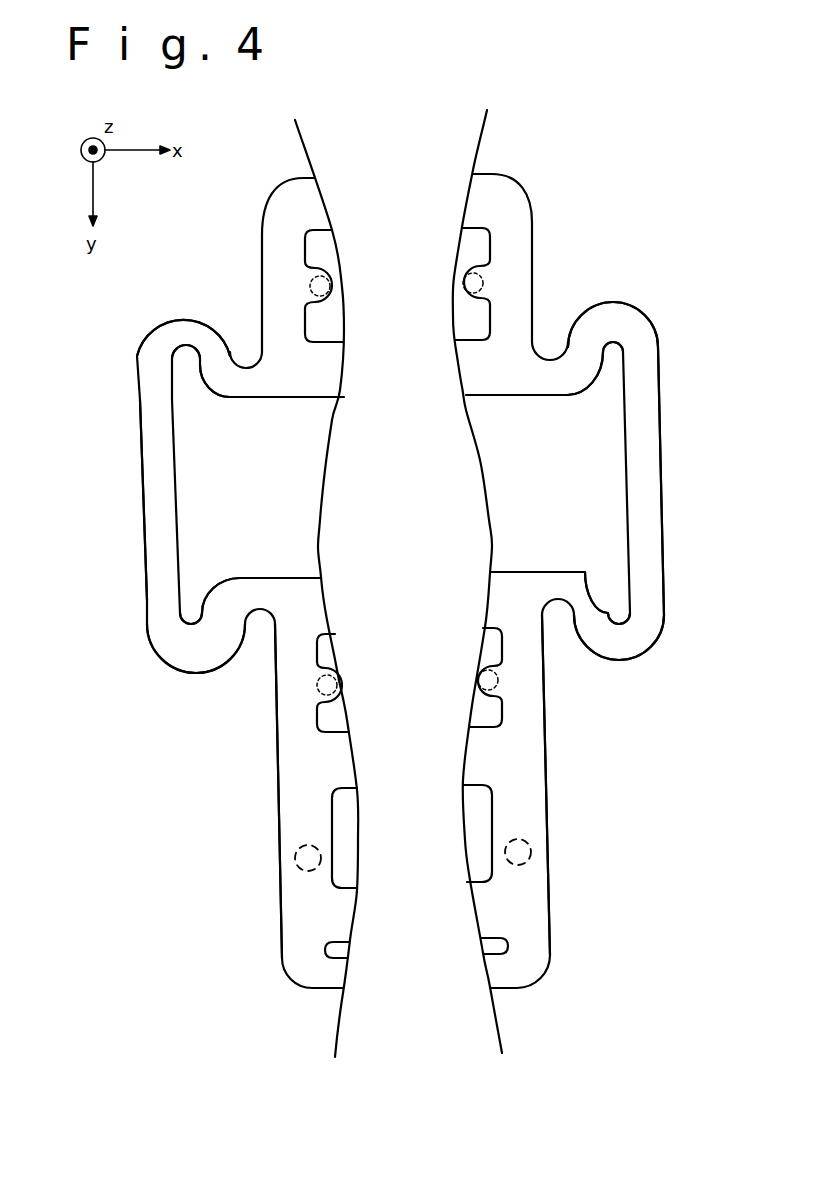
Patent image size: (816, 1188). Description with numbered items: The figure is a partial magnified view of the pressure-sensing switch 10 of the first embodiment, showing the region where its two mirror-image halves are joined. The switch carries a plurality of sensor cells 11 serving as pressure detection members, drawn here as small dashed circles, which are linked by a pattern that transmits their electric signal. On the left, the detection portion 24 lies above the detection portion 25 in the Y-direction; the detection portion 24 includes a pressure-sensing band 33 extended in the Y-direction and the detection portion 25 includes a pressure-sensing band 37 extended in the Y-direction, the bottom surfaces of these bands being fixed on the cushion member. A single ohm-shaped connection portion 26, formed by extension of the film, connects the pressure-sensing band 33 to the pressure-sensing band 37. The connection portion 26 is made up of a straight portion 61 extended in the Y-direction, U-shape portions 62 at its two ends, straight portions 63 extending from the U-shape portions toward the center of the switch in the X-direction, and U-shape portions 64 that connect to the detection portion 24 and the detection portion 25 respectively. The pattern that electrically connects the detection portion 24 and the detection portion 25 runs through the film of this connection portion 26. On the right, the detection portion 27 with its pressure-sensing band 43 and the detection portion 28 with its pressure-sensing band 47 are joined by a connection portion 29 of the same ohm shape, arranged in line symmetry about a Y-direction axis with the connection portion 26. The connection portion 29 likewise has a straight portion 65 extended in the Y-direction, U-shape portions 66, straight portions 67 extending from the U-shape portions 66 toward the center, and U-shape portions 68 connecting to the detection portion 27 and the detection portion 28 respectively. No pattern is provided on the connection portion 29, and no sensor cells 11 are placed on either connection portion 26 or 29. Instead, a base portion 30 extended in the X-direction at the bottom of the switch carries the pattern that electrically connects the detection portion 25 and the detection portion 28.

The pressure-sensing switch 10 is at (150, 823).
The sensor cell 11 is at (538, 856).
The detection portion 24 is at (238, 225).
The detection portion 25 is at (262, 986).
The connection portion 26 is at (124, 559).
The detection portion 27 is at (553, 194).
The detection portion 28 is at (572, 982).
The connection portion 29 is at (688, 543).
The base portion 30 is at (333, 980).
The pressure-sensing band 33 is at (272, 277).
The pressure-sensing band 37 is at (283, 833).
The pressure-sensing band 43 is at (517, 260).
The pressure-sensing band 47 is at (545, 790).
The straight portion 61 is at (155, 503).
The U-shape portion 62 is at (180, 332).
The straight portion 63 is at (210, 360).
The U-shape portion 64 is at (250, 383).
The arm outer edge 65 is at (655, 485).
The U-shape portion 66 is at (610, 323).
The straight portion 67 is at (575, 350).
The U-shape portion 68 is at (566, 372).